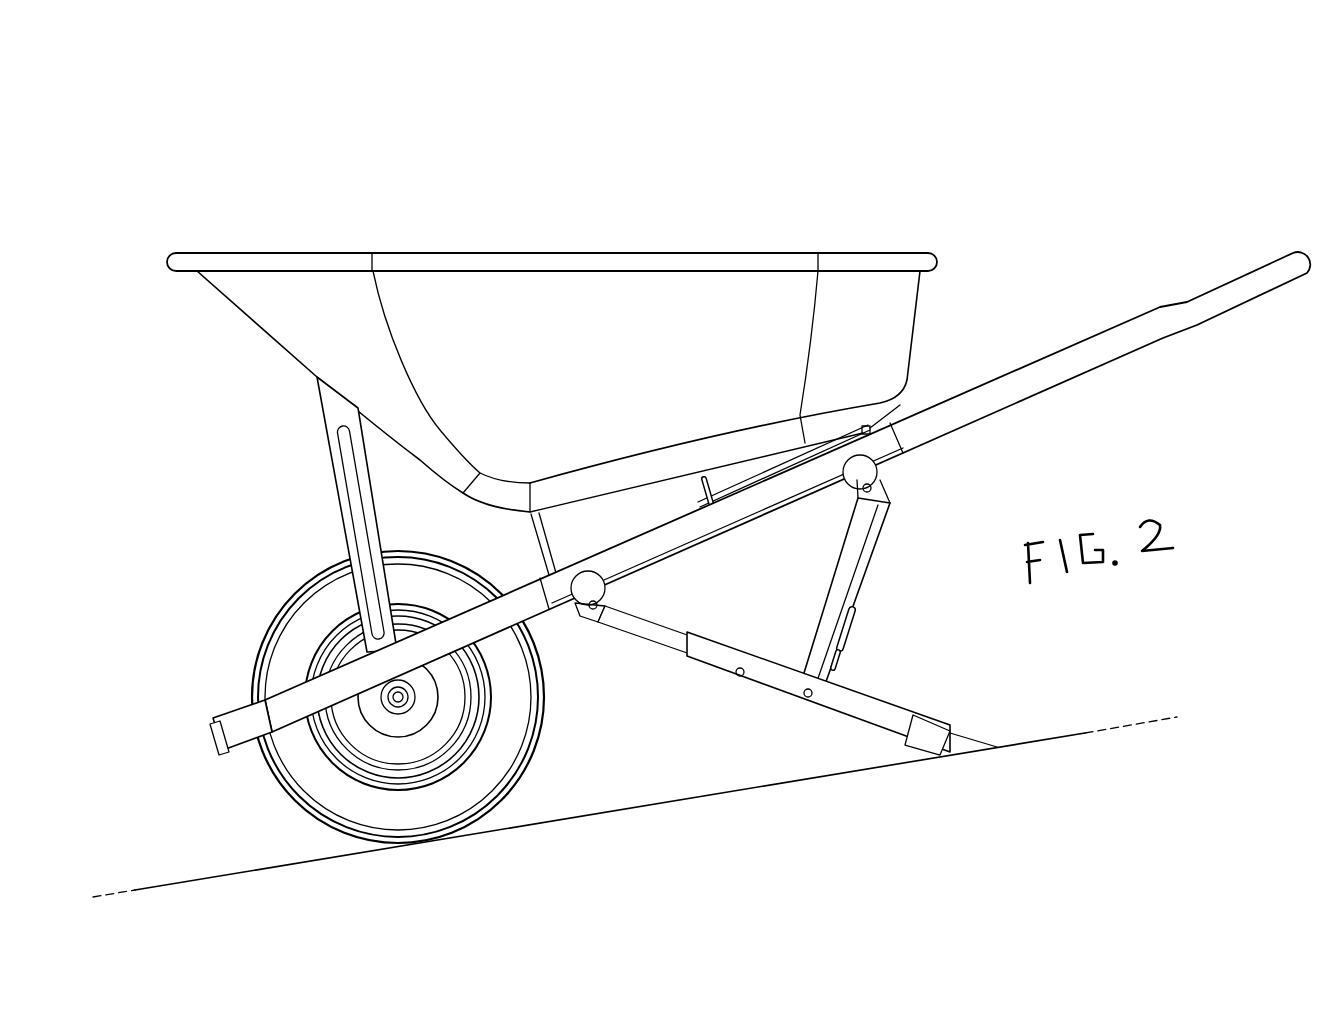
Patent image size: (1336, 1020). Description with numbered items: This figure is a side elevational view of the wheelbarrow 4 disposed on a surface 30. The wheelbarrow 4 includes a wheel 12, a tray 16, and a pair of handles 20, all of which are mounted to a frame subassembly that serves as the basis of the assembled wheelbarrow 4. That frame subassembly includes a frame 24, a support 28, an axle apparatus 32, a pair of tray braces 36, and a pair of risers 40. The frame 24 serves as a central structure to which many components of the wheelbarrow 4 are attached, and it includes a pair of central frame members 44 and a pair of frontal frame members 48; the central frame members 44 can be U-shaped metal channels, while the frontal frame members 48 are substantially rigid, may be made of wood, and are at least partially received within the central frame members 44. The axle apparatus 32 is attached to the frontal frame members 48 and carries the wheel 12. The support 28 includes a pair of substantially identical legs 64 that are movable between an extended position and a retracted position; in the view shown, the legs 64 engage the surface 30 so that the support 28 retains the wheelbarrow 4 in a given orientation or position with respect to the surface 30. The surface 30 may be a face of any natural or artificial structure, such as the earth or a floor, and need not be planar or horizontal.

The wheelbarrow 4 is at (797, 187).
The wheel 12 is at (540, 688).
The tray 16 is at (437, 253).
The handles 20 is at (998, 378).
The frame 24 is at (553, 631).
The support 28 is at (865, 646).
The surface 30 is at (1115, 723).
The axle apparatus 32 is at (387, 702).
The tray braces 36 is at (333, 462).
The risers 40 is at (545, 541).
The central frame members 44 is at (700, 548).
The frontal frame members 48 is at (272, 647).
The legs 64 is at (760, 707).